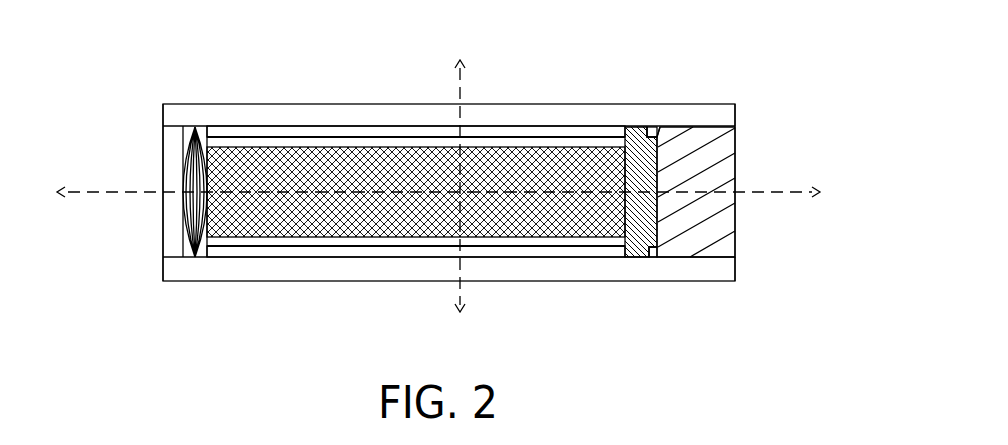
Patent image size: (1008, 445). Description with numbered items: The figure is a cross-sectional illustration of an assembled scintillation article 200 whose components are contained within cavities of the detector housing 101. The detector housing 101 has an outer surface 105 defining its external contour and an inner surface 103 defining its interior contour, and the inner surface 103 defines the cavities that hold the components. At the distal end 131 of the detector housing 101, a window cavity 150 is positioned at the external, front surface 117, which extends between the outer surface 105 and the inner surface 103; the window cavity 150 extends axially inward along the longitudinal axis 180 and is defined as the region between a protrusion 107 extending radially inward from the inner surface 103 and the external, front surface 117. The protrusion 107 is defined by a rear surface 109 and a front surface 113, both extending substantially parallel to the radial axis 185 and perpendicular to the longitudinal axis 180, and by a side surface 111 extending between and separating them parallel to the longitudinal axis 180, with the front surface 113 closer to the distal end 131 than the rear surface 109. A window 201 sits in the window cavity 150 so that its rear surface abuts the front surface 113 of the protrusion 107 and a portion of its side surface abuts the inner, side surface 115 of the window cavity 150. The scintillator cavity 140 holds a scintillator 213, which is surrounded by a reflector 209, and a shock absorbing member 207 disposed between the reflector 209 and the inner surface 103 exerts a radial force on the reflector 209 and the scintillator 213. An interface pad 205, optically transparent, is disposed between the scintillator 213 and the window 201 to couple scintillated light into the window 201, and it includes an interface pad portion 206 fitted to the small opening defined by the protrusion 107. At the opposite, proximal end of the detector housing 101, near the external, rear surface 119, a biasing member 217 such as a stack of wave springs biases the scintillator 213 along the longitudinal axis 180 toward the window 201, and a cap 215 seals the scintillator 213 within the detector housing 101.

The scintillation article 200 is at (118, 43).
The detector housing 101 is at (185, 115).
The inner surface 103 is at (260, 127).
The outer surface 105 is at (242, 281).
The protrusion 107 is at (653, 250).
The rear surface 109 is at (647, 127).
The side surface 111 is at (652, 135).
The front surface 113 is at (666, 126).
The inner, side surface 115 is at (690, 257).
The external, front surface 117 is at (737, 105).
The external, rear surface 119 is at (162, 115).
The distal end 131 is at (756, 268).
The scintillator cavity 140 is at (219, 212).
The window cavity 150 is at (717, 206).
The longitudinal axis 180 is at (792, 192).
The radial axis 185 is at (458, 84).
The window 201 is at (695, 160).
The interface pad 205 is at (637, 238).
The interface pad portion 206 is at (657, 235).
The shock absorbing member 207 is at (482, 132).
The reflector 209 is at (365, 242).
The scintillator 213 is at (327, 232).
The cap 215 is at (168, 175).
The biasing member 217 is at (190, 255).